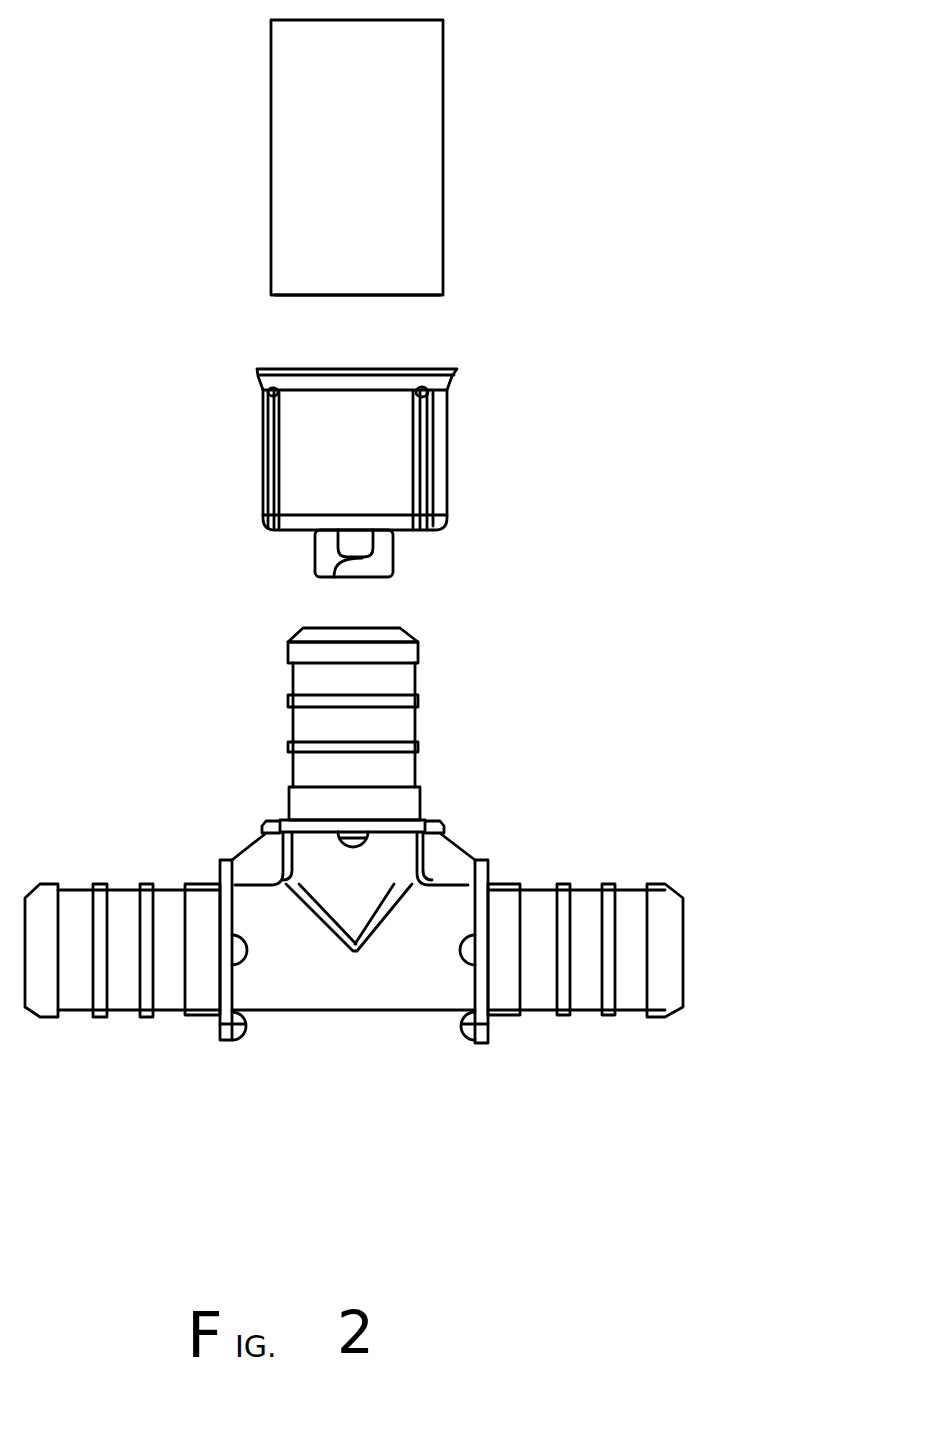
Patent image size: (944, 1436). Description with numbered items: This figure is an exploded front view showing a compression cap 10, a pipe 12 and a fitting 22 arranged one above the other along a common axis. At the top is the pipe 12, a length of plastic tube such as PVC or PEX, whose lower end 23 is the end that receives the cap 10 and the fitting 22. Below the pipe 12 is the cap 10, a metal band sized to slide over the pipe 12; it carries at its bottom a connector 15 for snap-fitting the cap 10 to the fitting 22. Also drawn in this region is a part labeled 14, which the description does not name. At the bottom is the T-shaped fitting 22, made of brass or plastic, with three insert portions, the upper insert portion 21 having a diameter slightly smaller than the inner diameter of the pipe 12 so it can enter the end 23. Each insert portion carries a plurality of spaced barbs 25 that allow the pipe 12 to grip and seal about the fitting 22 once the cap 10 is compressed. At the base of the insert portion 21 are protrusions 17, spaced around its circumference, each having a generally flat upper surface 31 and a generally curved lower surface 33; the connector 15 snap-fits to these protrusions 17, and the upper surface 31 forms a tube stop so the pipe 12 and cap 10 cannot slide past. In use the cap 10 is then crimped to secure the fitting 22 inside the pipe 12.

The compression cap 10 is at (222, 367).
The pipe 12 is at (420, 100).
The cup housing 14 is at (425, 453).
The connector 15 is at (383, 552).
The protrusions 17 is at (347, 833).
The insert portion 21 is at (428, 724).
The fitting 22 is at (227, 707).
The end 23 is at (410, 295).
The barbs 25 is at (420, 748).
The upper surface 31 is at (353, 820).
The lower surface 33 is at (355, 845).